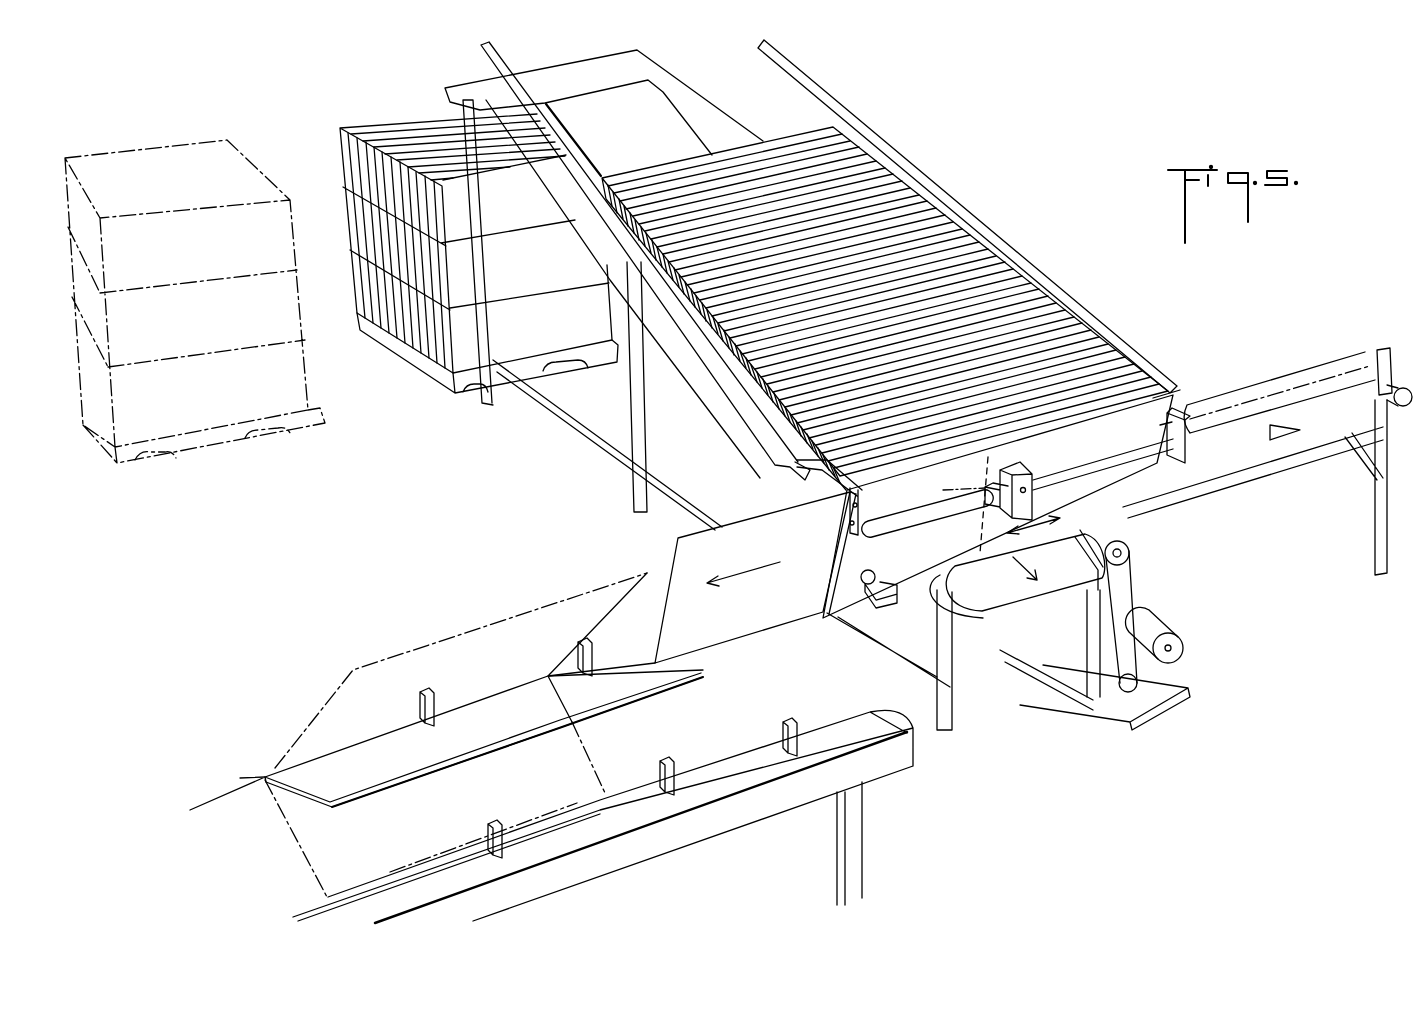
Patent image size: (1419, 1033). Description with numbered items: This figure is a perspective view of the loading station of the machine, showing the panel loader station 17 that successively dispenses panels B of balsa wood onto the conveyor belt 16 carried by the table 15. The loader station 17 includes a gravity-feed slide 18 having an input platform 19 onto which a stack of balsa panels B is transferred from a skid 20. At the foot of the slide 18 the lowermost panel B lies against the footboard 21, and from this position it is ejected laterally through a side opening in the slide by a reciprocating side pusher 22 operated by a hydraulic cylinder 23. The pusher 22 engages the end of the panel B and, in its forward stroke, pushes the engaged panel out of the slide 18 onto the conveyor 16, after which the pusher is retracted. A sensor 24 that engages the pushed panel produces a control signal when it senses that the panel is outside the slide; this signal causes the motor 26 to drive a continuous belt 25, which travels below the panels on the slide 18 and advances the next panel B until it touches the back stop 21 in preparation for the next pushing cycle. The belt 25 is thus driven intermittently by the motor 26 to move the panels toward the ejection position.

The table 15 is at (760, 805).
The conveyor belt 16 is at (880, 697).
The panel loader station 17 is at (987, 123).
The gravity-feed slide 18 is at (1003, 249).
The input platform 19 is at (663, 68).
The skid 20 is at (320, 413).
The footboard 21 is at (1178, 412).
The reciprocating side pusher 22 is at (1034, 498).
The hydraulic cylinder 23 is at (1290, 390).
The sensor 24 is at (890, 601).
The continuous belt 25 is at (1012, 610).
The motor 26 is at (1158, 634).
The panel of balsa wood B is at (824, 131).